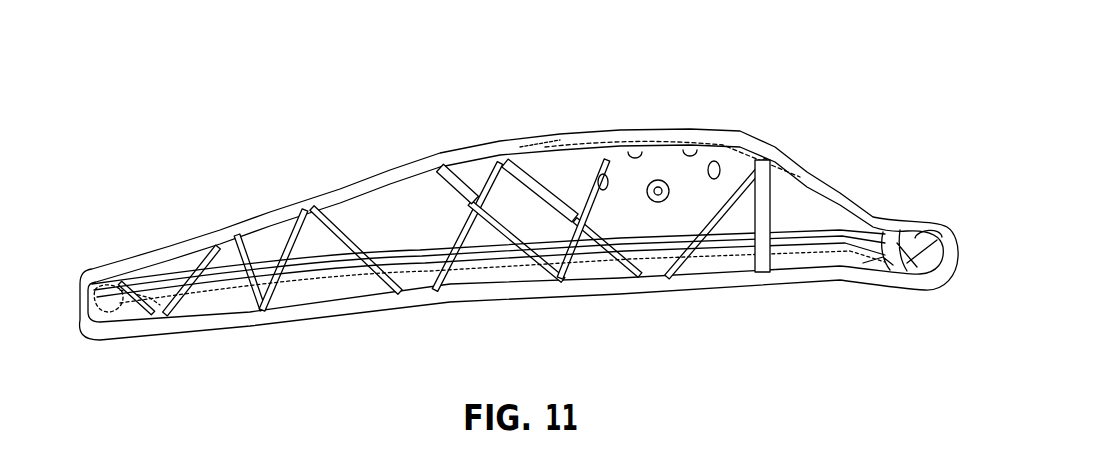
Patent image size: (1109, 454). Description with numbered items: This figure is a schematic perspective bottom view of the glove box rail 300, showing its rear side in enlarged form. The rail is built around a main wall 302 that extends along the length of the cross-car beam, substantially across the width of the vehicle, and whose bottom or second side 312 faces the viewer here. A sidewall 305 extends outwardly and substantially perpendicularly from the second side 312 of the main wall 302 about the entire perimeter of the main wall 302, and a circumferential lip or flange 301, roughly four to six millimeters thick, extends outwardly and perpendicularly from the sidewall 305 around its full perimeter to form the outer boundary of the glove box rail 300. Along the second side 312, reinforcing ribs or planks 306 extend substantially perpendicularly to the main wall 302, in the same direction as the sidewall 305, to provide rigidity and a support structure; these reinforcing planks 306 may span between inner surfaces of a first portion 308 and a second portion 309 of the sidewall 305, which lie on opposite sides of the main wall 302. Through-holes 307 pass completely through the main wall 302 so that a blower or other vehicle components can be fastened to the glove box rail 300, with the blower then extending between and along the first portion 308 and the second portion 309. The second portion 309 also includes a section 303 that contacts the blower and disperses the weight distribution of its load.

The glove box rail 300 is at (778, 97).
The circumferential lip or flange 301 is at (647, 128).
The main wall 302 is at (808, 210).
The section 303 is at (545, 140).
The sidewall 305 is at (692, 150).
The reinforcing ribs or planks 306 is at (285, 254).
The through-holes 307 is at (604, 173).
The first portion of the sidewall 308 is at (434, 305).
The second portion of the sidewall 309 is at (630, 140).
The second side 312 is at (790, 200).